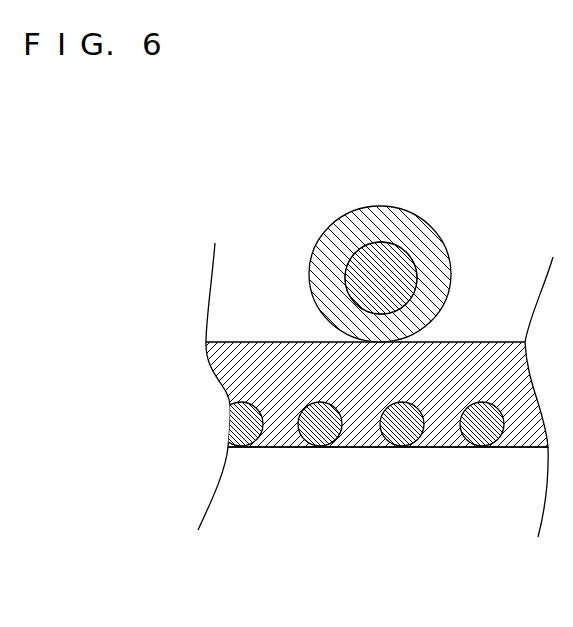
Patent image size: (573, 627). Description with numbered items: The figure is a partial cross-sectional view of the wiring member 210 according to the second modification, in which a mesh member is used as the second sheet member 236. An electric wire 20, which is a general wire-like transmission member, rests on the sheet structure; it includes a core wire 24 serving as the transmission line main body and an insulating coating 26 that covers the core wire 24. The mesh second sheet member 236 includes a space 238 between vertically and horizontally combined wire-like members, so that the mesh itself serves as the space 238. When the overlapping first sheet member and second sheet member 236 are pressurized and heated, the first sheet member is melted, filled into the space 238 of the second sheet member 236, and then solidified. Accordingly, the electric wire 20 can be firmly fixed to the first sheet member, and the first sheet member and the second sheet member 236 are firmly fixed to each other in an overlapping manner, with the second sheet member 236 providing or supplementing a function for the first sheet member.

The electric wire 20 is at (380, 216).
The core wire 24 is at (433, 152).
The insulating coating 26 is at (397, 205).
The wiring member 210 is at (497, 202).
The second sheet member 236 is at (512, 448).
The space 238 is at (368, 448).